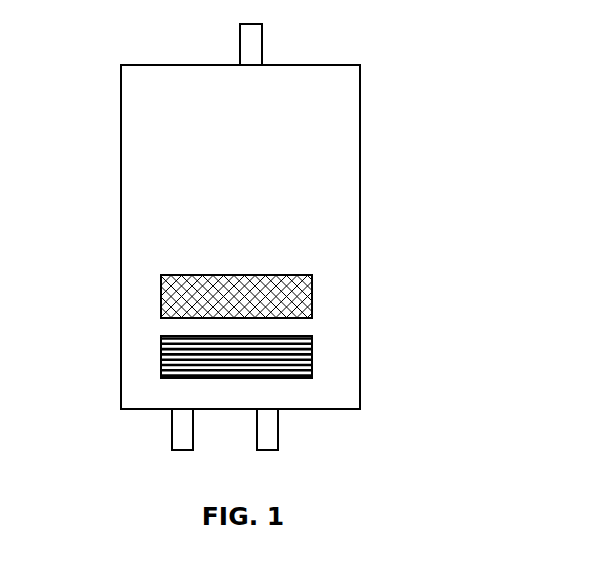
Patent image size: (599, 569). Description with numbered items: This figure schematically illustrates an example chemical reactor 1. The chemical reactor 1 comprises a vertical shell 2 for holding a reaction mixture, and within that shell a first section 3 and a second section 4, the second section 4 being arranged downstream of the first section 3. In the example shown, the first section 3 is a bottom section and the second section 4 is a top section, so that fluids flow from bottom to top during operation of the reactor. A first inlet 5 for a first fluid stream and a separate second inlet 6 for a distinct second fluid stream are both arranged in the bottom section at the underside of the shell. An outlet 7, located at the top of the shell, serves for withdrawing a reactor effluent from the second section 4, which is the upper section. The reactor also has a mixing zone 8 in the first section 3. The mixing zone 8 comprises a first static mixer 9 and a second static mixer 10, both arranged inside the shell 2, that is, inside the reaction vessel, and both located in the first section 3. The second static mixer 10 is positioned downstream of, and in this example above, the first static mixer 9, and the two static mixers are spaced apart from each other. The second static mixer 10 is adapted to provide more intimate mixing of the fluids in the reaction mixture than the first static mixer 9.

The chemical reactor 1 is at (360, 145).
The vertical shell 2 is at (360, 183).
The first section 3 is at (360, 373).
The second section 4 is at (360, 80).
The first inlet 5 is at (193, 430).
The second inlet 6 is at (278, 430).
The outlet 7 is at (262, 48).
The mixing zone 8 is at (360, 316).
The first static mixer 9 is at (161, 357).
The second static mixer 10 is at (161, 300).